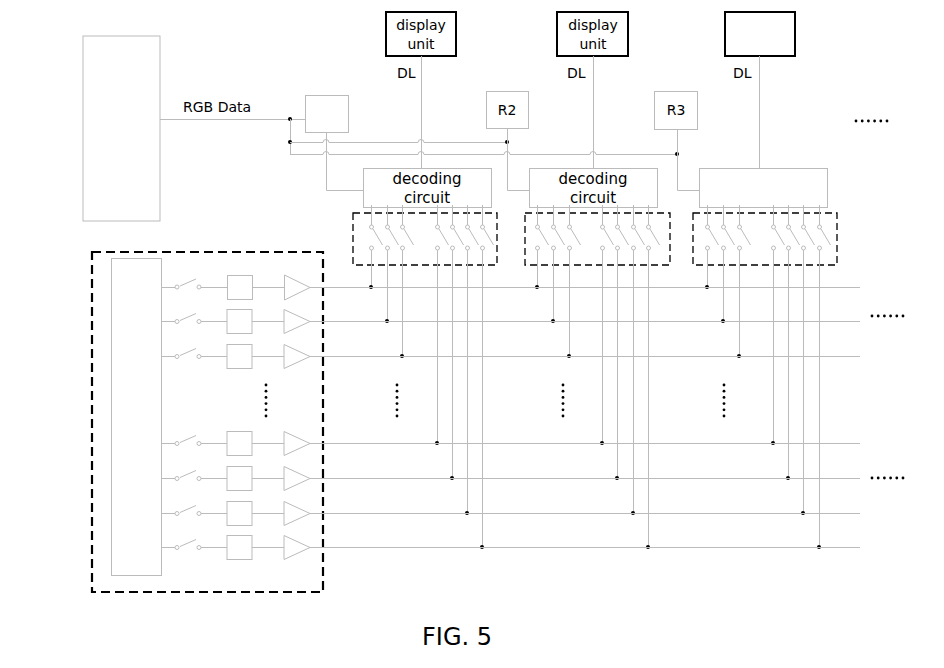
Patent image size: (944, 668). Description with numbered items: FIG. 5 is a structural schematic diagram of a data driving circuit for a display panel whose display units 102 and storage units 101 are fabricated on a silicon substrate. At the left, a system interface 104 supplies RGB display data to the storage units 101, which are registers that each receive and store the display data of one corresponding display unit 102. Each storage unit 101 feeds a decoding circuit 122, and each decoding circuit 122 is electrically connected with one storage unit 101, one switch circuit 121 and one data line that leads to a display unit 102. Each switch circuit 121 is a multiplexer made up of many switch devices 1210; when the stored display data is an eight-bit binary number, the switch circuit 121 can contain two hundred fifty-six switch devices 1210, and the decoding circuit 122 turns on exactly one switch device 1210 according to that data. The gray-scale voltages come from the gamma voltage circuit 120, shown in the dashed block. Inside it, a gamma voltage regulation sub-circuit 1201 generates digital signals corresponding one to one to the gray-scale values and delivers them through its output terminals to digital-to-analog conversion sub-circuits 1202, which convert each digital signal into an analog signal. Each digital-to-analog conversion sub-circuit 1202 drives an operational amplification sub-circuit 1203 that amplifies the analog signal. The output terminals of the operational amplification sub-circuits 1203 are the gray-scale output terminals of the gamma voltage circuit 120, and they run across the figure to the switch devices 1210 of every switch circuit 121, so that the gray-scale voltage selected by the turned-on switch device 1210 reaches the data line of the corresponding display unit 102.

The system interface 104 is at (128, 74).
The storage unit 101 is at (323, 100).
The display unit 102 is at (780, 40).
The decoding circuit 122 is at (813, 181).
The switch circuit 121 is at (799, 235).
The switch device 1210 is at (826, 240).
The gamma voltage circuit 120 is at (440, 403).
The gamma voltage regulation sub-circuit 1201 is at (142, 291).
The digital-to-analog conversion sub-circuit 1202 is at (239, 288).
The operational amplification sub-circuit 1203 is at (292, 284).